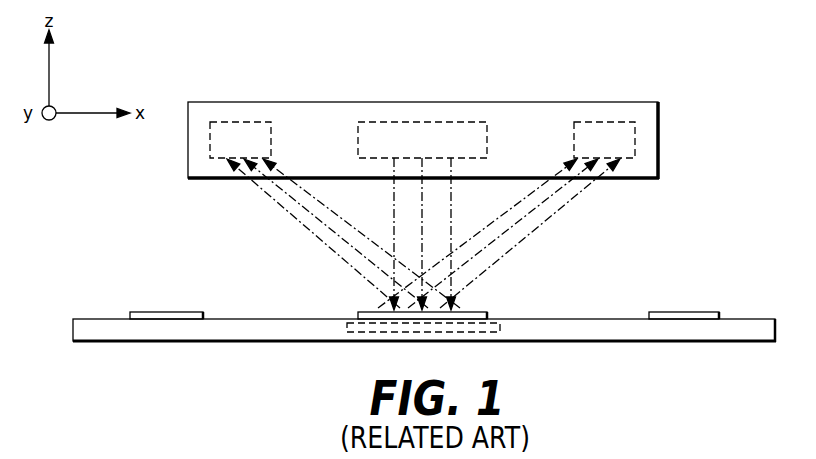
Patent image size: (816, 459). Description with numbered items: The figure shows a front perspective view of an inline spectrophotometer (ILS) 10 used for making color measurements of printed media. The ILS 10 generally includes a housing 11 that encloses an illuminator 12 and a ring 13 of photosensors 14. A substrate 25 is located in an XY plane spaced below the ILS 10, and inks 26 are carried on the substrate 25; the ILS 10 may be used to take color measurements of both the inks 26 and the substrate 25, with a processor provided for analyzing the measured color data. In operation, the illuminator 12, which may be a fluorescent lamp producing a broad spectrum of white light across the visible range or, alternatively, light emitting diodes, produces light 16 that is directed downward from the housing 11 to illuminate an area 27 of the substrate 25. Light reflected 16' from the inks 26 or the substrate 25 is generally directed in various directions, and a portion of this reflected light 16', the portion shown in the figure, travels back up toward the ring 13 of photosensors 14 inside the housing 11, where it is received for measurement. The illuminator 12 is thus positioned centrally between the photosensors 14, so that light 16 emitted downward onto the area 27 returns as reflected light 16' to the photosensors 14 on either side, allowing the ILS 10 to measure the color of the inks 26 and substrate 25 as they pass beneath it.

The inline spectrophotometer 10 is at (266, 25).
The housing 11 is at (660, 156).
The illuminator 12 is at (410, 152).
The ring 13 is at (599, 122).
The photosensors 14 is at (228, 152).
The light 16 is at (440, 234).
The reflected light 16' is at (423, 233).
The substrate 25 is at (243, 319).
The inks 26 is at (177, 311).
The area 27 is at (500, 329).